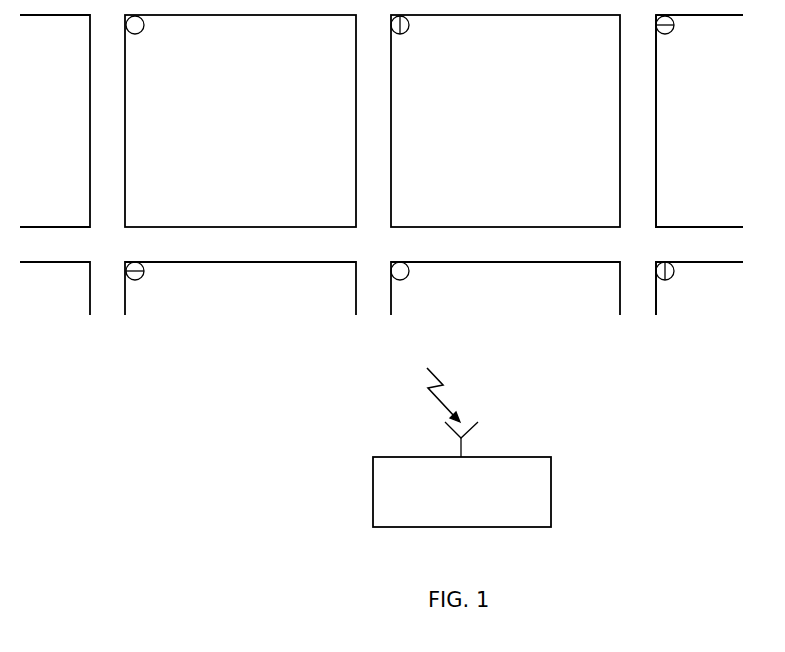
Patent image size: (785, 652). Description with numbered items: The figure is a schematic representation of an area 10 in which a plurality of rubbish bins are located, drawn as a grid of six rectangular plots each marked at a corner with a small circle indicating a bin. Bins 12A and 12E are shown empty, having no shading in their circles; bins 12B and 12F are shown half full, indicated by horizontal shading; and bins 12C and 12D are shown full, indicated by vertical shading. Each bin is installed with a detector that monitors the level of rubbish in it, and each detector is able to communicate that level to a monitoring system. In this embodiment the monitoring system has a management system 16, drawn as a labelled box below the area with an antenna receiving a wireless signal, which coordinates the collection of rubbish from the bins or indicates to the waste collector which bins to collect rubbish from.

The area 10 is at (609, 359).
The rubbish bin 12A is at (143, 33).
The rubbish bin 12B is at (408, 33).
The rubbish bin 12C is at (672, 33).
The rubbish bin 12D is at (143, 279).
The rubbish bin 12E is at (408, 279).
The rubbish bin 12F is at (672, 279).
The management system 16 is at (551, 492).